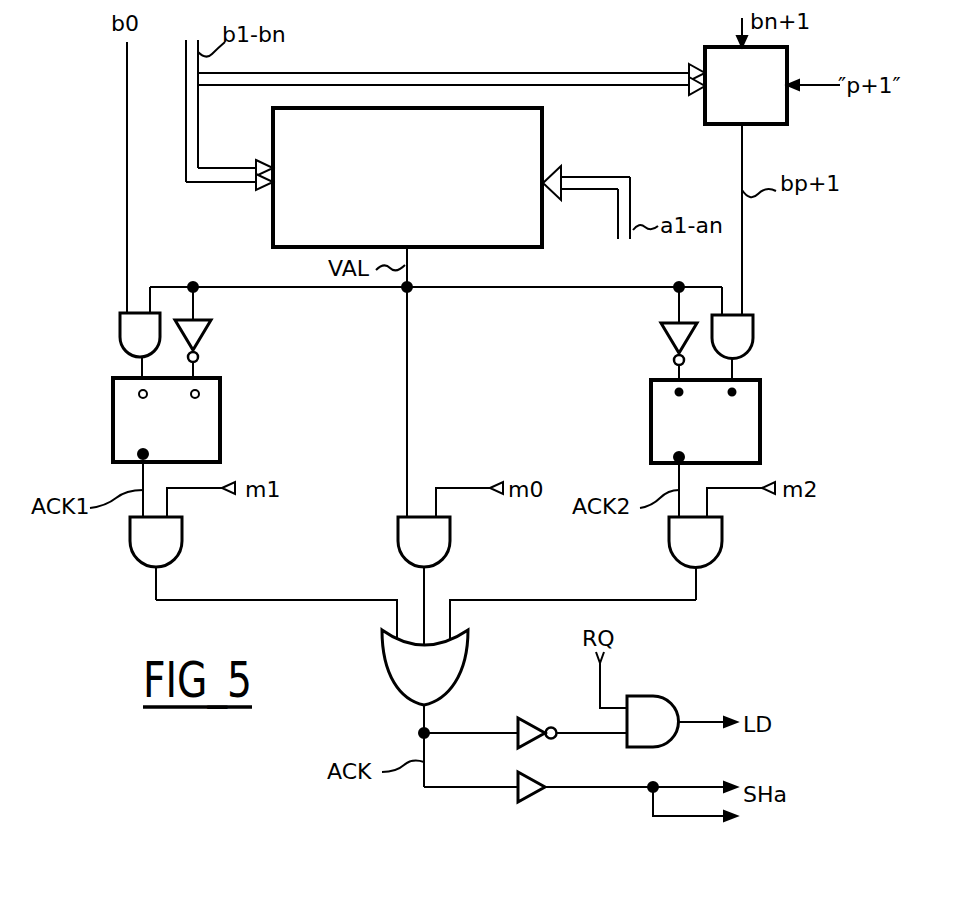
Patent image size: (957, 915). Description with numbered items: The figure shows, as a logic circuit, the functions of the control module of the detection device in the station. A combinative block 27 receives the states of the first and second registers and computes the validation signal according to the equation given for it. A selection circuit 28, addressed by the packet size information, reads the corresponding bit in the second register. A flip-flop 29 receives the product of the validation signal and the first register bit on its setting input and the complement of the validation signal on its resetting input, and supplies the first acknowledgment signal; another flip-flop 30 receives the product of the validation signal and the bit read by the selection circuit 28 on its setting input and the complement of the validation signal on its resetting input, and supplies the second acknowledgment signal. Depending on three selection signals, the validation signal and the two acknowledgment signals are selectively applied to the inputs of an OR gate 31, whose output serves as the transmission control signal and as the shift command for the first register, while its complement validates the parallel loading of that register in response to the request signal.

The combinative block 27 is at (273, 215).
The selection circuit 28 is at (705, 52).
The flip-flop 29 is at (113, 423).
The flip-flop 30 is at (760, 420).
The OR gate 31 is at (382, 666).